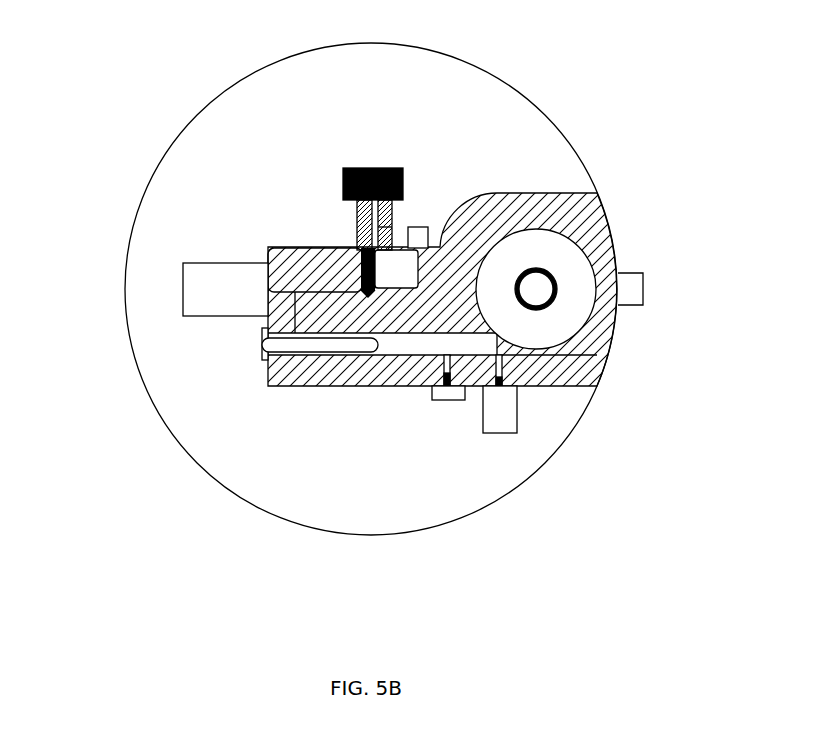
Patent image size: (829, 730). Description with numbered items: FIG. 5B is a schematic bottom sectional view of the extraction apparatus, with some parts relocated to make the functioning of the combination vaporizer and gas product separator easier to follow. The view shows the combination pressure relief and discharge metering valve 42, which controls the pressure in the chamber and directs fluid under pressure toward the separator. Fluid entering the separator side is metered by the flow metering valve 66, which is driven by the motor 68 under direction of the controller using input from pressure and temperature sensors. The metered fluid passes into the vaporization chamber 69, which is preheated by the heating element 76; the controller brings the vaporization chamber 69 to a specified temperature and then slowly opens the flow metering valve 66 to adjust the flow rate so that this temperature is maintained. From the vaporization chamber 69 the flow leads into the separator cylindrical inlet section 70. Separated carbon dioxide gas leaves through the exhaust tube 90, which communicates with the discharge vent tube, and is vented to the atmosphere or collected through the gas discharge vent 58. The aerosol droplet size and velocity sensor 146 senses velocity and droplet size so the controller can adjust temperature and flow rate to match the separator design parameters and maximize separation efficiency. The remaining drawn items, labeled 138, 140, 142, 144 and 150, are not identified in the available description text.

The combination pressure relief and discharge metering valve 42 is at (344, 167).
The gas discharge vent 58 is at (646, 272).
The flow metering valve 66 is at (360, 287).
The motor 68 is at (214, 292).
The vaporization chamber 69 is at (382, 344).
The separator cylindrical inlet section 70 is at (584, 233).
The heating element 76 is at (259, 343).
The exhaust tube 90 is at (558, 304).
The circular housing 138 is at (178, 441).
The lower tab 140 is at (451, 403).
The upper tab 142 is at (431, 224).
The cavity 144 is at (366, 272).
The aerosol droplet size and velocity sensor 146 is at (503, 437).
The lower plate 150 is at (524, 346).